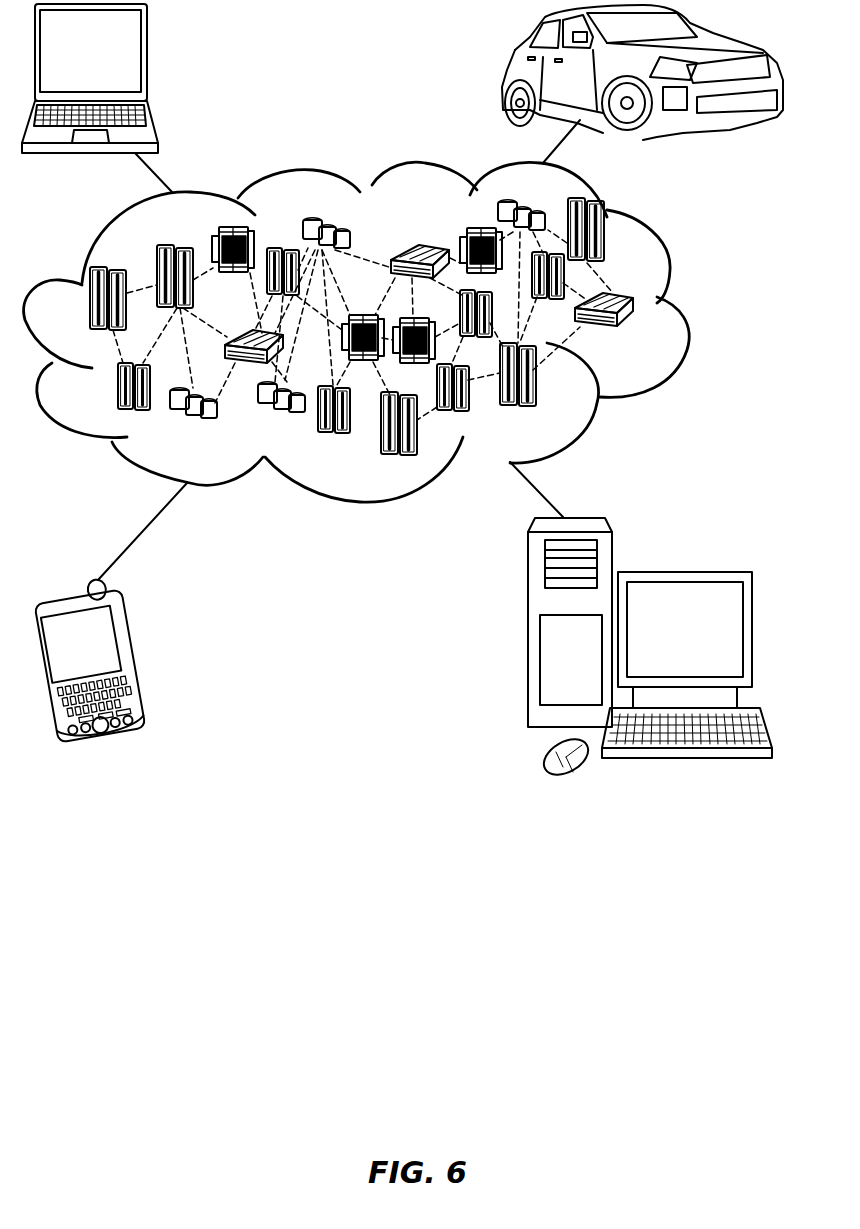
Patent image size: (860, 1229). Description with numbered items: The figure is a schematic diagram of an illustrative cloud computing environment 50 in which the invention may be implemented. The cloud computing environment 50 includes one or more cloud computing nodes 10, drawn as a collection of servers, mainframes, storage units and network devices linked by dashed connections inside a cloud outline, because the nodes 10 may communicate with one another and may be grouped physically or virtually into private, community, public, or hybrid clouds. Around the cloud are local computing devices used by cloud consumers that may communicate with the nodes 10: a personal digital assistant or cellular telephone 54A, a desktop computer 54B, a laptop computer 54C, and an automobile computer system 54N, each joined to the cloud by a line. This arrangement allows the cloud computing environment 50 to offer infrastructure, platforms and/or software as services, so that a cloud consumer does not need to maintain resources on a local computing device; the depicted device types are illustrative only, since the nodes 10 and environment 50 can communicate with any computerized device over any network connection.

The cloud computing environment 50 is at (684, 313).
The cloud computing node 10 is at (645, 342).
The personal digital assistant or cellular telephone 54A is at (138, 653).
The desktop computer 54B is at (682, 570).
The laptop computer 54C is at (147, 58).
The automobile computer system 54N is at (507, 72).